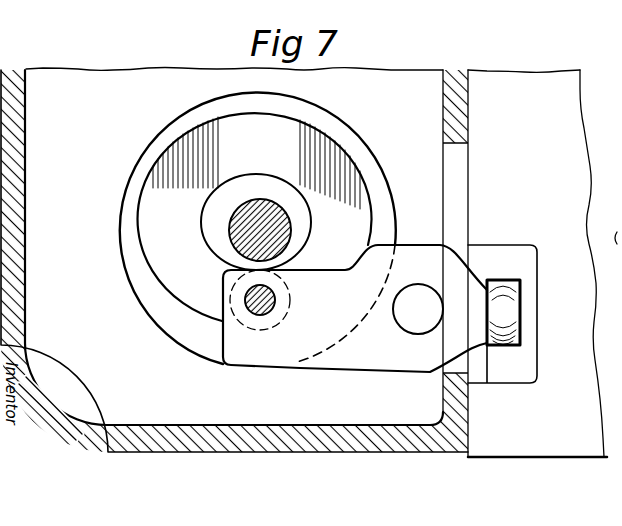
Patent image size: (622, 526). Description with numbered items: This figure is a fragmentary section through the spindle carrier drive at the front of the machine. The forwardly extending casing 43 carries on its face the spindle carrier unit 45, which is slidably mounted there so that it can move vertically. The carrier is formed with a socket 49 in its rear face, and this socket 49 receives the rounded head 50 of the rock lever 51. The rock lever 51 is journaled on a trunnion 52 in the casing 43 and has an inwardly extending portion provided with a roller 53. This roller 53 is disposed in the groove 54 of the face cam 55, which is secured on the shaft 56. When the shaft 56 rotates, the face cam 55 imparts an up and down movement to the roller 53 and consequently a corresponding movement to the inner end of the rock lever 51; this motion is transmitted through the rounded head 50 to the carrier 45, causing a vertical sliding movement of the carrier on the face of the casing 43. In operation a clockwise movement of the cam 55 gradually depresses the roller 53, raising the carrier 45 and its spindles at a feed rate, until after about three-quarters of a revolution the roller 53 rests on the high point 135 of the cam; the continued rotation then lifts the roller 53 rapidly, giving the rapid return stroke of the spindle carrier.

The casing 43 is at (77, 440).
The spindle carrier unit 45 is at (553, 118).
The socket 49 is at (541, 371).
The rounded head 50 is at (502, 304).
The rock lever 51 is at (412, 248).
The trunnion 52 is at (417, 307).
The roller 53 is at (277, 318).
The groove 54 is at (158, 208).
The face cam 55 is at (148, 180).
The shaft 56 is at (270, 238).
The high point 135 is at (201, 221).